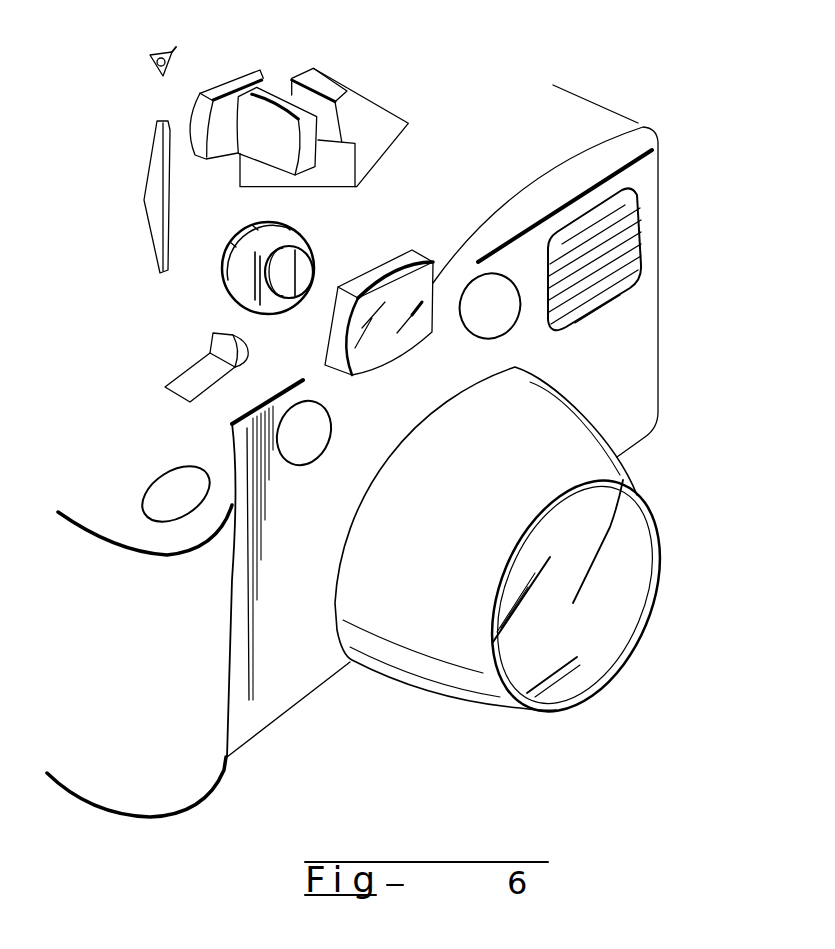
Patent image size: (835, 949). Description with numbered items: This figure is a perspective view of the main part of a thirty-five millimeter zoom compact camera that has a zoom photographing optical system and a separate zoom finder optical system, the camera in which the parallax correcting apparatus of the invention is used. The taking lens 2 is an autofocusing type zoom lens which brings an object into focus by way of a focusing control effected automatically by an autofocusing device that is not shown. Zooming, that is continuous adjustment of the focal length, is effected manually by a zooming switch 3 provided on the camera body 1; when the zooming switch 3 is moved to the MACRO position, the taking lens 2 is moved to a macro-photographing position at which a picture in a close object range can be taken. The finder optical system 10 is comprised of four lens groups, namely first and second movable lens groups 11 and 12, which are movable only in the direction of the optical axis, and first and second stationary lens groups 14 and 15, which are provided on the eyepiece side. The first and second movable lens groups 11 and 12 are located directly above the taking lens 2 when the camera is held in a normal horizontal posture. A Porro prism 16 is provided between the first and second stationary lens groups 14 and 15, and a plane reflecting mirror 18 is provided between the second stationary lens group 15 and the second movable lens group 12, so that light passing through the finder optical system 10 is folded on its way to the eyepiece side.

The camera body 1 is at (650, 366).
The taking lens 2 is at (610, 588).
The zooming switch 3 is at (213, 347).
The finder optical system 10 is at (390, 174).
The first movable lens group 11 is at (632, 123).
The second movable lens group 12 is at (282, 278).
The first stationary lens group 14 is at (226, 87).
The second stationary lens group 15 is at (276, 96).
The Porro prism 16 is at (362, 110).
The plane reflecting mirror 18 is at (152, 185).